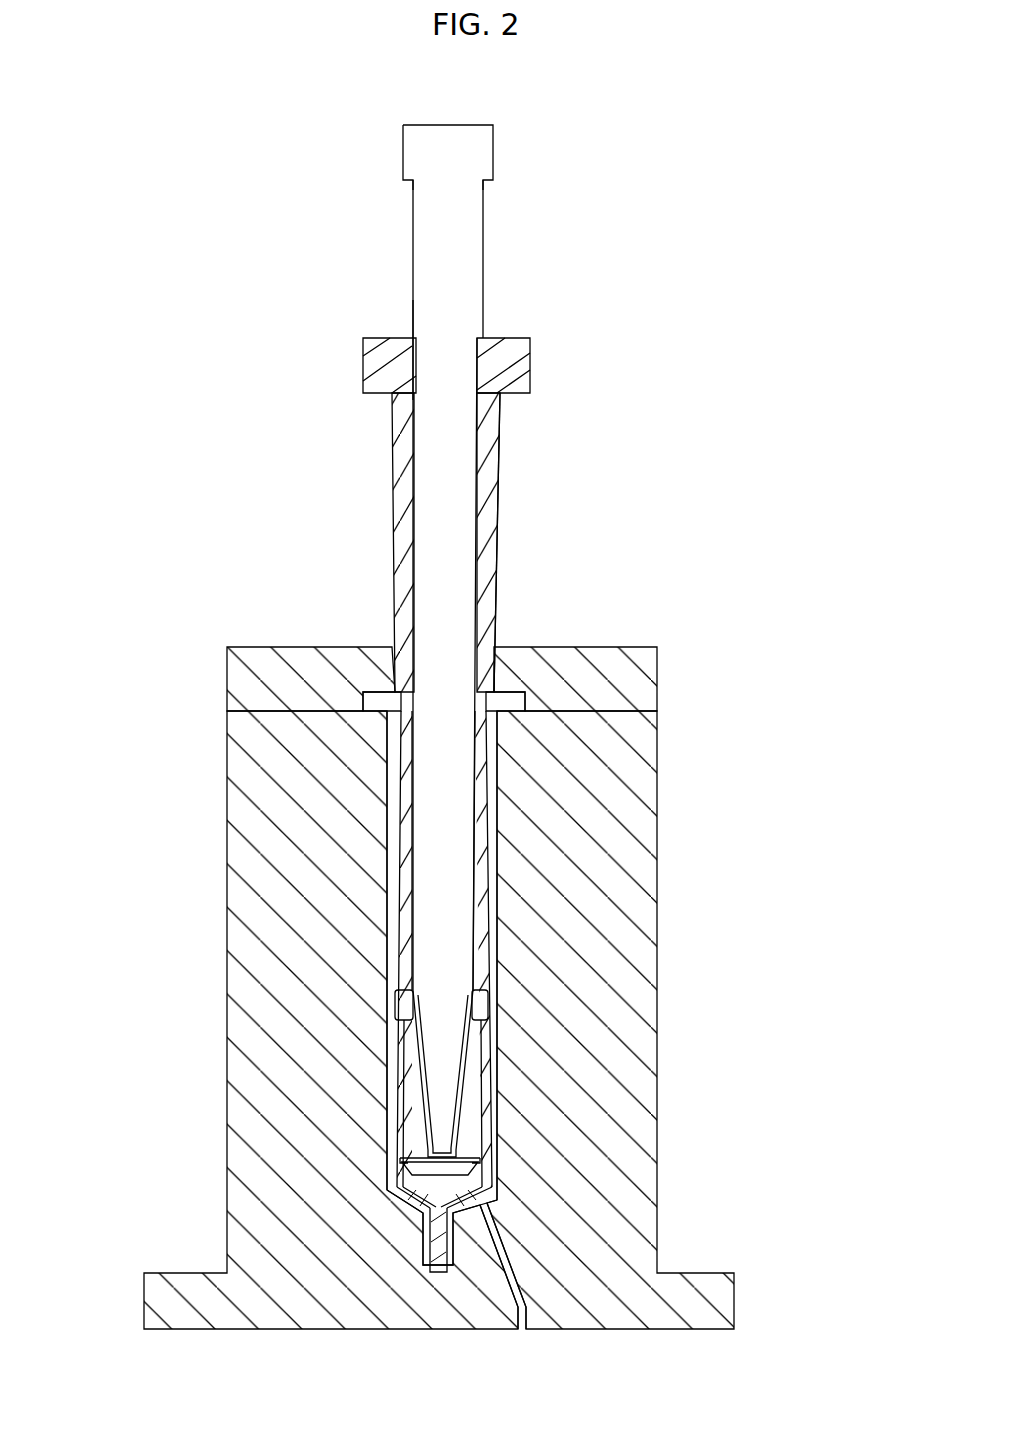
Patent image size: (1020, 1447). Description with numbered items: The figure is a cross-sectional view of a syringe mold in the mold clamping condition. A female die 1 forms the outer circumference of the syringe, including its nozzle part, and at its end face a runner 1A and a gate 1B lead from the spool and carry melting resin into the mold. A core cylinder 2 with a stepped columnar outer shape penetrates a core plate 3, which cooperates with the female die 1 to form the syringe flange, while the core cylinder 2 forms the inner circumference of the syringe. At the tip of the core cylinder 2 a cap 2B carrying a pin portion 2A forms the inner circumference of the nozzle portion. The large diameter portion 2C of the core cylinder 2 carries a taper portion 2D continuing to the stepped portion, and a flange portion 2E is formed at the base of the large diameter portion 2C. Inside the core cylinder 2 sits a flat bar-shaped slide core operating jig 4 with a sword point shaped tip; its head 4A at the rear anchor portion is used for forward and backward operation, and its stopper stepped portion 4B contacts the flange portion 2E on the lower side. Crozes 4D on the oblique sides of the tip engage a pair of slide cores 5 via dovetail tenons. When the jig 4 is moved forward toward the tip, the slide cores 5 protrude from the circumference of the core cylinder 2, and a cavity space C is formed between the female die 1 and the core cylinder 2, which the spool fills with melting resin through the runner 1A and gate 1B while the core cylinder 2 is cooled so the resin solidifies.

The female die 1 is at (676, 850).
The runner 1A is at (497, 1248).
The gate 1B is at (495, 1178).
The core cylinder 2 is at (373, 782).
The pin portion 2A is at (430, 1240).
The cap 2B is at (400, 1163).
The large diameter portion 2C is at (501, 528).
The taper portion 2D is at (497, 673).
The flange portion 2E is at (531, 365).
The core plate 3 is at (303, 647).
The slide core operating jig 4 is at (437, 625).
The head 4A is at (494, 159).
The stopper stepped portion 4B is at (400, 350).
The crozes 4D is at (400, 1057).
The slide cores 5 is at (395, 1003).
The cavity space C is at (387, 897).